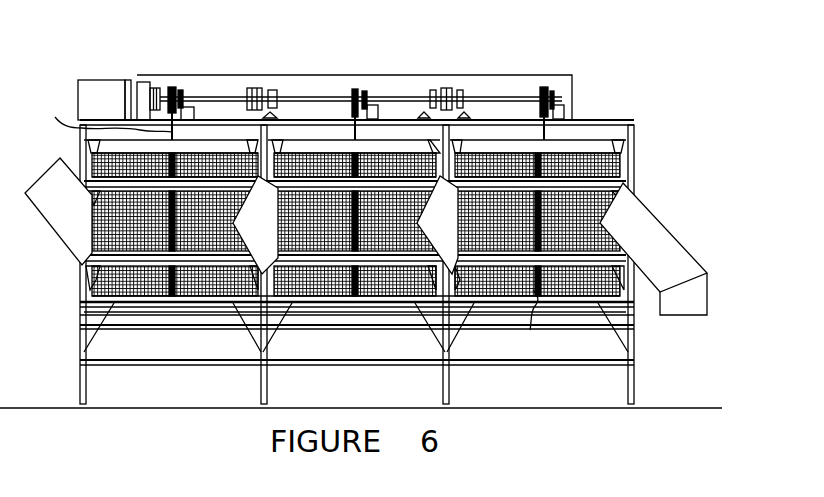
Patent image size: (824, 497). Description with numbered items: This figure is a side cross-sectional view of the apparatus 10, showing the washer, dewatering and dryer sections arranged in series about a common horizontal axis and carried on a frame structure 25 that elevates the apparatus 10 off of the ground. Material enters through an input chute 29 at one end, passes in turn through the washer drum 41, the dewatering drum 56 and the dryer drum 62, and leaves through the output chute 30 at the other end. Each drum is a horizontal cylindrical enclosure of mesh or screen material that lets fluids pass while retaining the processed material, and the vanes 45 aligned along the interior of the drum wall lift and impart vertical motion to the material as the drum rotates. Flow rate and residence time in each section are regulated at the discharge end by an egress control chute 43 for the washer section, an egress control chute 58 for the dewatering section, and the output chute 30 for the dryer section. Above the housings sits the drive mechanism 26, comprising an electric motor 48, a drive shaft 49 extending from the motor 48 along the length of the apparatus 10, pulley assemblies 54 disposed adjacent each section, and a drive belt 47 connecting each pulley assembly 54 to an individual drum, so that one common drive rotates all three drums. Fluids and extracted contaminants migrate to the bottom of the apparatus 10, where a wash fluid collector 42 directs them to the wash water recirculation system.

The apparatus 10 is at (708, 76).
The frame structure 25 is at (80, 356).
The drive mechanism 26 is at (586, 84).
The input chute 29 is at (57, 210).
The output chute 30 is at (680, 257).
The washer drum 41 is at (193, 155).
The wash fluid collector 42 is at (370, 295).
The egress control chute 43 is at (244, 234).
The vanes 45 is at (622, 165).
The drive belt 47 is at (284, 229).
The electric motor 48 is at (96, 88).
The drive shaft 49 is at (230, 96).
The pulley assemblies 54 is at (171, 86).
The dewatering drum 56 is at (397, 158).
The egress control chute 58 is at (429, 234).
The dryer drum 62 is at (573, 158).